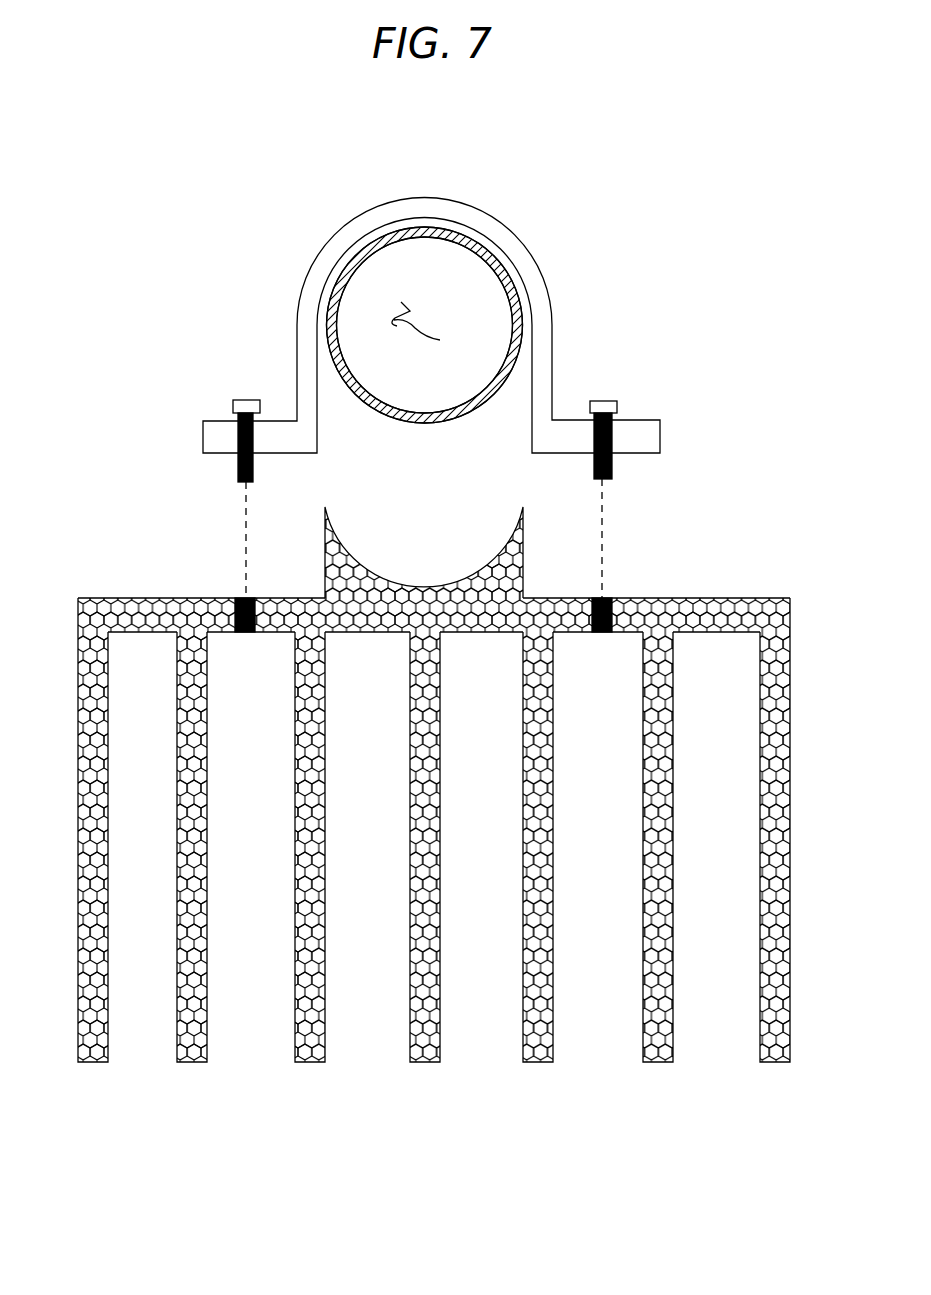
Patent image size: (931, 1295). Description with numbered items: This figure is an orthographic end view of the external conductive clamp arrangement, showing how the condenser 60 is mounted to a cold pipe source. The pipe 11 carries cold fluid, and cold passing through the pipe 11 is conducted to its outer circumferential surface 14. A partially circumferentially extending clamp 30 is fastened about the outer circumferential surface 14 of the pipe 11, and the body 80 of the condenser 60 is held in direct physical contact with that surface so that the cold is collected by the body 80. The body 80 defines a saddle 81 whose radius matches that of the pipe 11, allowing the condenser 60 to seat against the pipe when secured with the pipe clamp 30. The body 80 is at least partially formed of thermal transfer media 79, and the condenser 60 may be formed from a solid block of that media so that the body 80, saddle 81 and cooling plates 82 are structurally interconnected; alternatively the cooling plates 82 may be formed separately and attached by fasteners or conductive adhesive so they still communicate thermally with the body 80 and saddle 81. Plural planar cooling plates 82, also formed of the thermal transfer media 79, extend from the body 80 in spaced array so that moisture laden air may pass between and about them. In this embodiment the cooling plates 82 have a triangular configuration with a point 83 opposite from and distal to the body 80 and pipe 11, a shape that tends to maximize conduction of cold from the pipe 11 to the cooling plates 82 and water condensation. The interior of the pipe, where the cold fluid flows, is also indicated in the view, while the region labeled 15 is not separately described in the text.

The clamp 30 is at (383, 202).
The outer circumferential surface 14 is at (360, 401).
The pipe 11 is at (486, 417).
The fluid passage 15 is at (425, 325).
The condenser 60 is at (716, 587).
The body 80 is at (150, 608).
The saddle 81 is at (427, 587).
The thermal transfer media 79 is at (200, 767).
The cooling plates 82 is at (88, 1040).
The point 83 is at (420, 1043).